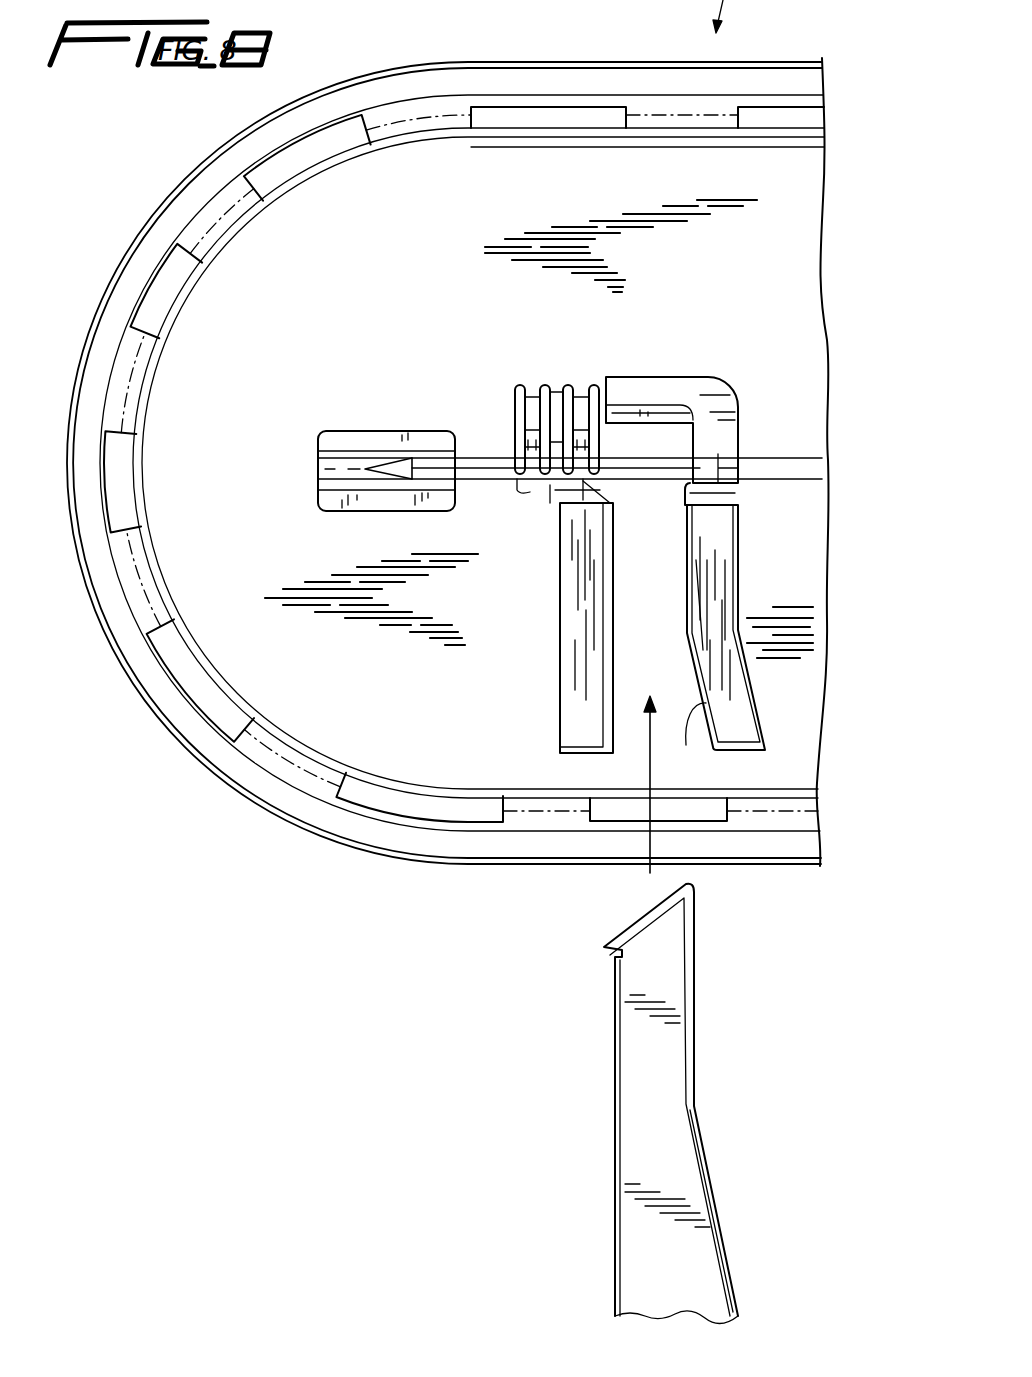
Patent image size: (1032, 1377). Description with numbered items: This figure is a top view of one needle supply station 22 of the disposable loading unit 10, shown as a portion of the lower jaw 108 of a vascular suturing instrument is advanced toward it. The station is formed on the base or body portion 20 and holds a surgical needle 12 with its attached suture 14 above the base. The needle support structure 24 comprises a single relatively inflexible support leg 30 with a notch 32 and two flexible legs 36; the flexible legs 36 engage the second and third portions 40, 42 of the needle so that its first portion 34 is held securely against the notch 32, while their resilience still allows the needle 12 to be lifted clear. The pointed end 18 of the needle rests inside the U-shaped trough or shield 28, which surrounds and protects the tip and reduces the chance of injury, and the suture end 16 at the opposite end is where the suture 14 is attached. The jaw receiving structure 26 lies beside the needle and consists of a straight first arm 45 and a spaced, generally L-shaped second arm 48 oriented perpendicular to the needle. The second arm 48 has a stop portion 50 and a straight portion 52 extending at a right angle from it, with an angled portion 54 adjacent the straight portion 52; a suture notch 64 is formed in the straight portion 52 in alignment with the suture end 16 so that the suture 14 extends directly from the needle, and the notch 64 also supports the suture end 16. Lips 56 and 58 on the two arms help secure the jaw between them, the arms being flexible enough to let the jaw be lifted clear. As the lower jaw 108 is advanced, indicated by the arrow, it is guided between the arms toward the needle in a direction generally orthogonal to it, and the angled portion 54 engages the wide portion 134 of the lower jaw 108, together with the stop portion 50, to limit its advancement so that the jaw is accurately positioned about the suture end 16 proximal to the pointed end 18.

The loading unit 10 is at (690, 12).
The surgical needle 12 is at (479, 440).
The suture 14 is at (791, 458).
The suture end 16 is at (627, 455).
The pointed end 18 is at (388, 448).
The base or body portion 20 is at (146, 236).
The needle supply station 22 is at (410, 196).
The needle support structure 24 is at (476, 358).
The jaw receiving structure 26 is at (743, 330).
The U-shaped trough or shield 28 is at (349, 433).
The support leg 30 is at (553, 487).
The notch 32 is at (555, 442).
The first portion 34 is at (560, 497).
The flexible legs 36 is at (530, 386).
The second portion 40 is at (547, 487).
The third portion 42 is at (607, 507).
The first leg 45 is at (580, 667).
The second arm 48 is at (731, 387).
The stop portion 50 is at (684, 379).
The straight portion 52 is at (745, 545).
The angled portion 54 is at (757, 707).
The lip 56 is at (613, 688).
The lip 58 is at (675, 784).
The suture notch 64 is at (734, 452).
The lower jaw 108 is at (693, 979).
The wide portion 134 is at (716, 1184).